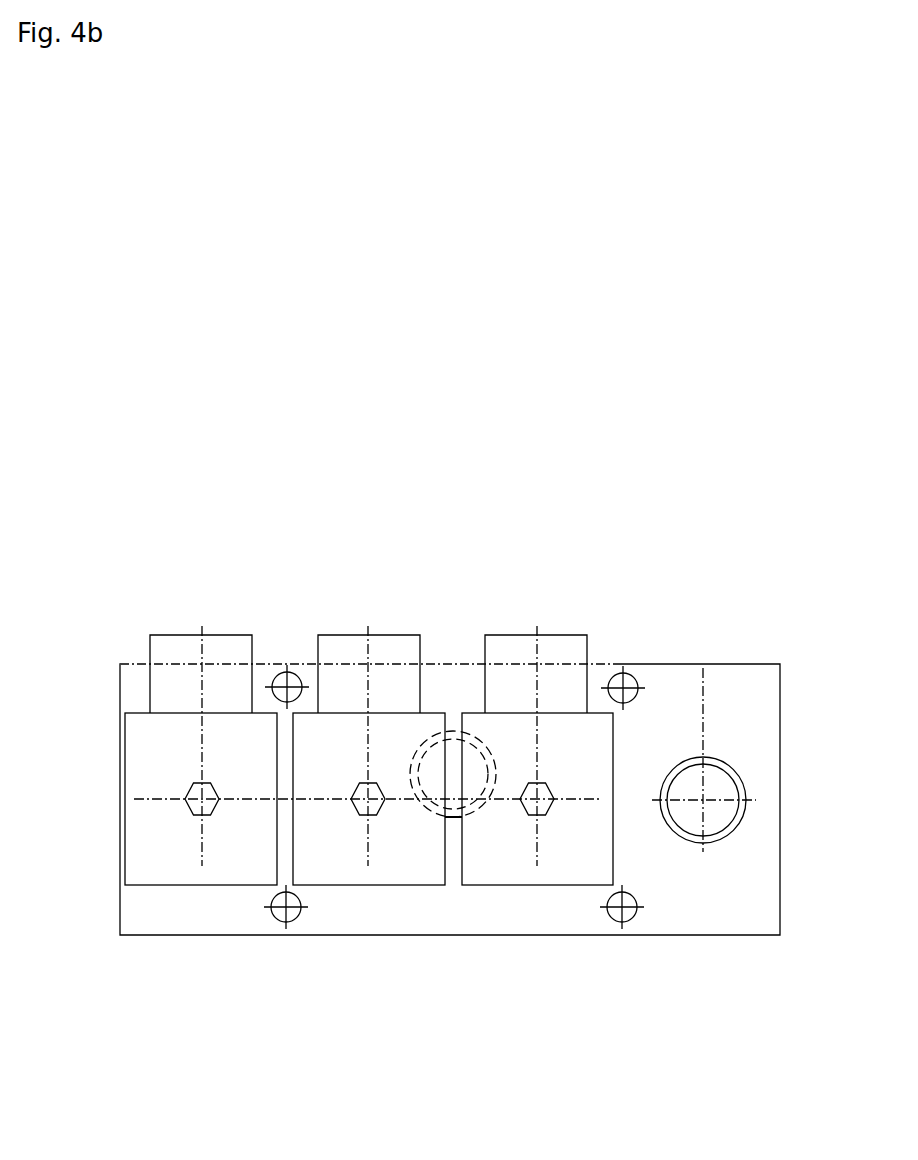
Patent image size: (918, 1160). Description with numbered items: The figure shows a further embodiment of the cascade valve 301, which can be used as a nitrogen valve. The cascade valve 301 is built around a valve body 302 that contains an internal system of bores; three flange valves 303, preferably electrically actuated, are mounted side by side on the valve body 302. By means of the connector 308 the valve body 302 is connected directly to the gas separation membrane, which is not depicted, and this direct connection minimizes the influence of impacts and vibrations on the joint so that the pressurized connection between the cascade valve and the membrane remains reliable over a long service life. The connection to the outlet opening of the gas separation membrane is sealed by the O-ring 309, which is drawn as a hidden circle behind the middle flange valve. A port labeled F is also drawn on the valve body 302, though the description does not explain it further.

The cascade valve 301 is at (888, 858).
The valve body 302 is at (158, 910).
The flange valves 303 is at (510, 728).
The connector 308 is at (610, 674).
The O-ring 309 is at (478, 742).
The port F is at (733, 767).